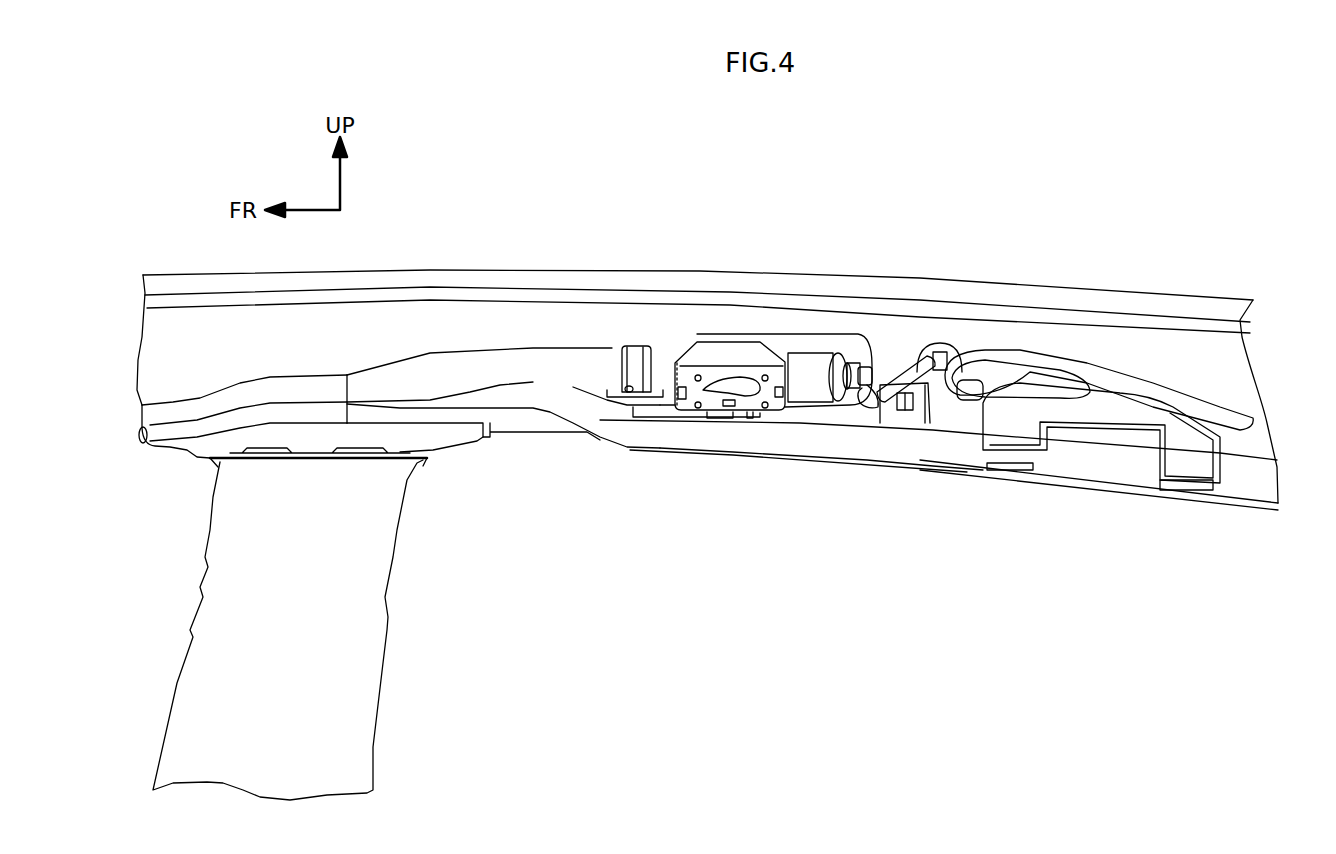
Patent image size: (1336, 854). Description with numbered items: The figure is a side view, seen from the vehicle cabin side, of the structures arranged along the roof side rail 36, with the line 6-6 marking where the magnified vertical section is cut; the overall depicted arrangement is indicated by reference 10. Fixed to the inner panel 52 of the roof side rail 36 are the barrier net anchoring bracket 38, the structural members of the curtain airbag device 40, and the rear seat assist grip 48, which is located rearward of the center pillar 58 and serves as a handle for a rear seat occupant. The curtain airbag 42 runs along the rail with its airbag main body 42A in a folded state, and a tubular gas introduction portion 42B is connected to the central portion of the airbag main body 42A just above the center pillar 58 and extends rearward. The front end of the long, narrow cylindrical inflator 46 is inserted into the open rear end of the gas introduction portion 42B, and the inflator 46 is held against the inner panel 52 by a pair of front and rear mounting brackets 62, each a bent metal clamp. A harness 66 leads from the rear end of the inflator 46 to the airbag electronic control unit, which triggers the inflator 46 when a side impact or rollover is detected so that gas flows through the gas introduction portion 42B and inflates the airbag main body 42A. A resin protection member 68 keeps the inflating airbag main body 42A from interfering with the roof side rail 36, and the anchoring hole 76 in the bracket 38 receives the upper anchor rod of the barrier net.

The section line 6 is at (716, 462).
The door lock actuator assembly 10 is at (800, 310).
The roof side rail 36 is at (985, 274).
The barrier net anchoring bracket 38 is at (740, 333).
The curtain airbag device 40 is at (418, 332).
The curtain airbag 42 is at (271, 378).
The airbag main body 42A is at (905, 442).
The gas introduction portion 42B is at (505, 358).
The inflator 46 is at (668, 352).
The rear seat assist grip 48 is at (1185, 460).
The inner panel 52 is at (1065, 330).
The center pillar 58 is at (373, 653).
The mounting bracket 62 is at (633, 345).
The harness 66 is at (1120, 345).
The protection member 68 is at (950, 433).
The anchoring hole 76 is at (752, 420).